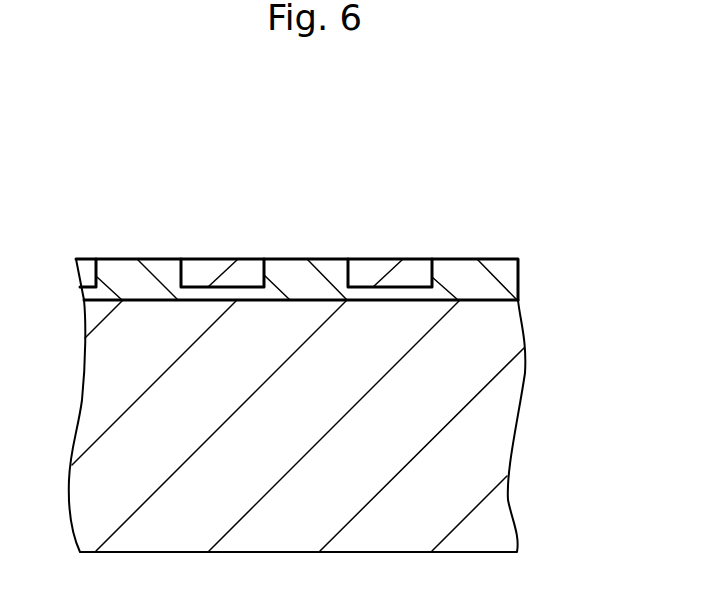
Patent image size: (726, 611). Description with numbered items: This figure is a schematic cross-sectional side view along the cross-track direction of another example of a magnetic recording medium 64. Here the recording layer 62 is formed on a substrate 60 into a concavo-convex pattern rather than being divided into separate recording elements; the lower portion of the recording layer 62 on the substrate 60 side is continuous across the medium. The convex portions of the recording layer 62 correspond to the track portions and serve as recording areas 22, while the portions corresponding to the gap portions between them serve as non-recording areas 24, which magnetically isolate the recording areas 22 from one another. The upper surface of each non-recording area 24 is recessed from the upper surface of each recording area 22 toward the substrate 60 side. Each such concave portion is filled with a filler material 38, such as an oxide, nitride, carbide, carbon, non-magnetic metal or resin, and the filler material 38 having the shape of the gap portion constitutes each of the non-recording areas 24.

The magnetic recording medium 64 is at (305, 136).
The substrate 60 is at (522, 408).
The recording layer 62 is at (505, 284).
The recording area 22 is at (180, 252).
The non-recording area 24 is at (263, 252).
The filler material 38 is at (235, 280).